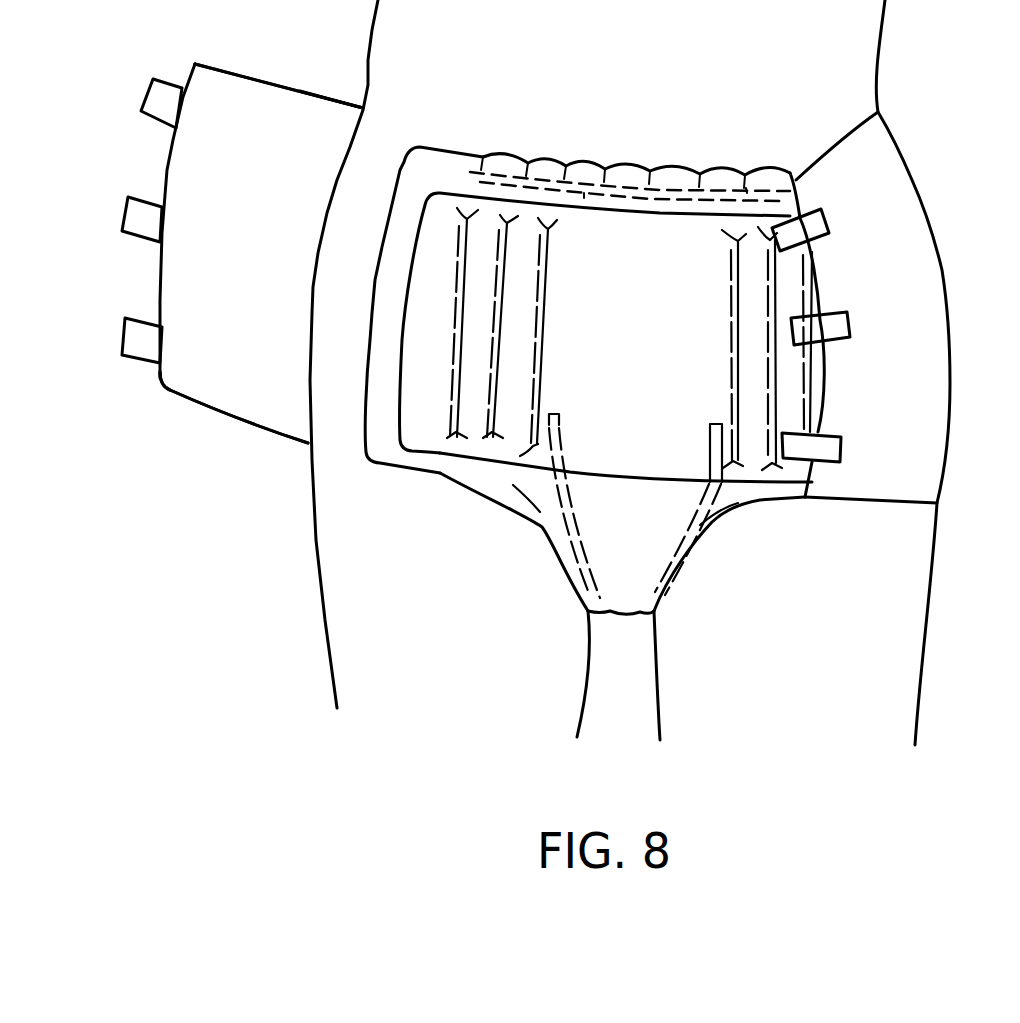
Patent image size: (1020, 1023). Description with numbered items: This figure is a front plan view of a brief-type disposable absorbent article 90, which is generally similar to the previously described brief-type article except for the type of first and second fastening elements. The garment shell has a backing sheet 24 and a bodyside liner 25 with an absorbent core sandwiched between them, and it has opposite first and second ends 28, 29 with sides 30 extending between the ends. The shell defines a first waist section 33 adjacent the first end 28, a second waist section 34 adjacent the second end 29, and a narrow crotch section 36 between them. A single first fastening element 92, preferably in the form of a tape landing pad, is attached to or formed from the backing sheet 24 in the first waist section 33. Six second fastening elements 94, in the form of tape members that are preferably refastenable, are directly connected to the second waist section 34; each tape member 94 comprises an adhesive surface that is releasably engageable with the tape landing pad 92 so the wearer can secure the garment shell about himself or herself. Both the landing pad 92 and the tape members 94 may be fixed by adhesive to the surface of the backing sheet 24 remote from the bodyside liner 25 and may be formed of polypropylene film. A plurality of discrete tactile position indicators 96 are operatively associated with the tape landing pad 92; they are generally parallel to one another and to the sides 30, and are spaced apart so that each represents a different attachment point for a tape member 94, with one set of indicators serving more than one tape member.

The backing sheet 24 is at (465, 464).
The bodyside liner 25 is at (258, 355).
The first end 28 is at (686, 172).
The second end 29 is at (336, 100).
The sides 30 is at (160, 376).
The first waist section 33 is at (604, 140).
The second waist section 34 is at (271, 58).
The crotch section 36 is at (542, 585).
The absorbent article 90 is at (245, 452).
The first fastening element 92 is at (631, 278).
The second fastening elements 94 is at (135, 195).
The tactile position indicators 96 is at (458, 323).